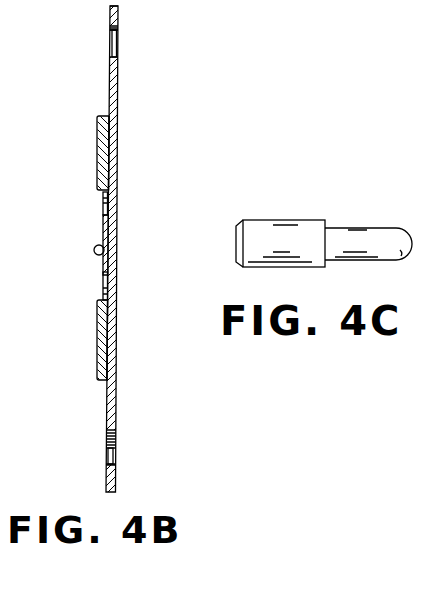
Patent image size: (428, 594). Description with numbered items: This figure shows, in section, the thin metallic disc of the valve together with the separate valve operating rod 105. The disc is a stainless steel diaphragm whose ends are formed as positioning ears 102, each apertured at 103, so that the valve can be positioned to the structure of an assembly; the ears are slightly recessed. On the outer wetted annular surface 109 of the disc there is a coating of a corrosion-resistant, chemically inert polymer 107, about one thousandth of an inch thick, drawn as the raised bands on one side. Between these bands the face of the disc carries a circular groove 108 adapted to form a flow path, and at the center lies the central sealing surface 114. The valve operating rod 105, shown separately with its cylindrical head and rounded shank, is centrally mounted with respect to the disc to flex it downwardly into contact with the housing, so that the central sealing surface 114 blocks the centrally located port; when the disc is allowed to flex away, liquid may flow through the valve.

In FIG. 4B, the positioning ears 102 is at (110, 13).
In FIG. 4B, the aperture 103 is at (118, 57).
In FIG. 4C, the valve operating rod 105 is at (286, 205).
In FIG. 4B, the polymer coating 107 is at (97, 137).
In FIG. 4B, the circular groove 108 is at (105, 205).
In FIG. 4B, the outer wetted annular surface 109 is at (111, 157).
In FIG. 4B, the central sealing surface 114 is at (103, 248).